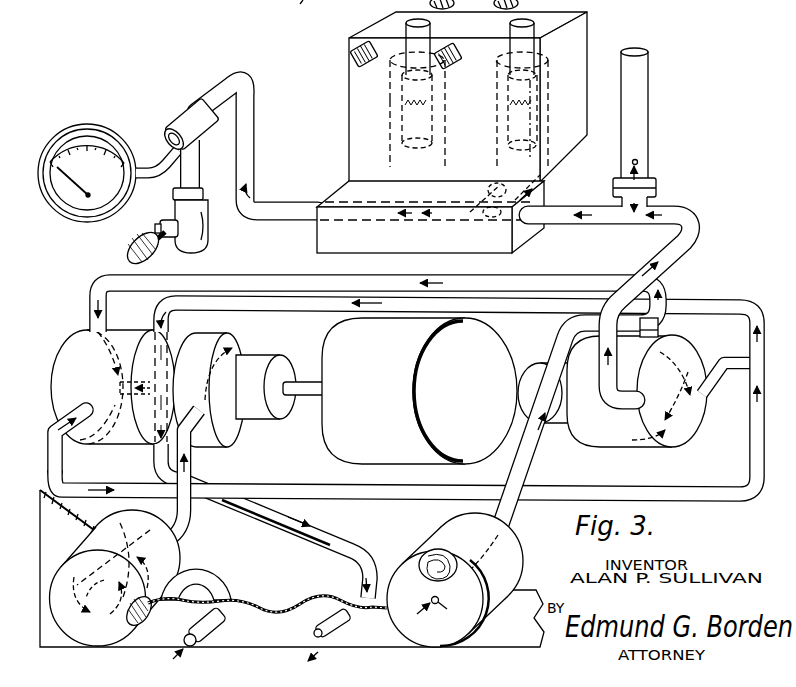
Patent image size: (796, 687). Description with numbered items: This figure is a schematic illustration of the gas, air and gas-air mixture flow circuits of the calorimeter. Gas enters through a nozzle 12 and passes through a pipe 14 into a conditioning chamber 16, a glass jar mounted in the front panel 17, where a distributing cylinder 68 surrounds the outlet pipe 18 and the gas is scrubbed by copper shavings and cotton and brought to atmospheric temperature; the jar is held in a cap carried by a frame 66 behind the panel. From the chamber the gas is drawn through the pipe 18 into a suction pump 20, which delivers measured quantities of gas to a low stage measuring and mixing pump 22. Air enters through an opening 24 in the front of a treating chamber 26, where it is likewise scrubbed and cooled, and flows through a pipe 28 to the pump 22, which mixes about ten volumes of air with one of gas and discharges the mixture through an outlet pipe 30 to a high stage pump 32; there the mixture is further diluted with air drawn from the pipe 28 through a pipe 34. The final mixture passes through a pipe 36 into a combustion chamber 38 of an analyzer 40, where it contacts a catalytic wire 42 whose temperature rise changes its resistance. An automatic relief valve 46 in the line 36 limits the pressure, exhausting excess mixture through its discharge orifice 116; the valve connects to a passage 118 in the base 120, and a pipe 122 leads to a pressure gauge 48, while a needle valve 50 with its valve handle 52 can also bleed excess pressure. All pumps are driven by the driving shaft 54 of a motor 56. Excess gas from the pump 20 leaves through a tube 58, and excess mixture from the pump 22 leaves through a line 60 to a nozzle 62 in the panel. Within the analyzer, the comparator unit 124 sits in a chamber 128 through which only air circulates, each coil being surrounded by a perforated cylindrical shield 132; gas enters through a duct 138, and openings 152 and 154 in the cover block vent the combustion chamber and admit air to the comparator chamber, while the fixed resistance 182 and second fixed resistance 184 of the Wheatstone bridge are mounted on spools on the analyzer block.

The nozzle 12 is at (223, 630).
The pipe 14 is at (223, 573).
The conditioning chamber 16 is at (63, 575).
The front panel 17 is at (285, 603).
The pipe 18 is at (176, 519).
The suction pump 20 is at (254, 345).
The low stage measuring and mixing pump 22 is at (76, 340).
The opening 24 is at (441, 604).
The treating chamber 26 is at (436, 538).
The pipe 28 is at (270, 282).
The outlet pipe 30 is at (62, 457).
The high stage pump 32 is at (687, 358).
The pipe 34 is at (661, 314).
The pipe 36 is at (677, 250).
The combustion chamber 38 is at (550, 84).
The analyzer 40 is at (587, 48).
The catalytic wire 42 is at (538, 112).
The automatic relief valve 46 is at (642, 108).
The pressure gauge 48 is at (128, 143).
The valve 50 is at (209, 226).
The valve handle 52 is at (128, 250).
The driving shaft 54 is at (300, 380).
The motor 56 is at (342, 440).
The tube 58 is at (311, 523).
The line 60 is at (156, 319).
The nozzle 62 is at (344, 626).
The frame 66 is at (304, 10).
The distributing cylinder 68 is at (120, 522).
The discharge orifice 116 is at (638, 158).
The passage 118 is at (418, 222).
The base 120 is at (527, 233).
The pipe 122 is at (251, 137).
The comparator unit 124 is at (395, 92).
The chamber 128 is at (390, 140).
The cylindrical shield 132 is at (403, 128).
The duct 138 is at (487, 190).
The opening 152 is at (587, 21).
The opening 154 is at (418, 23).
The fixed resistance 182 is at (453, 66).
The second fixed resistance 184 is at (353, 44).